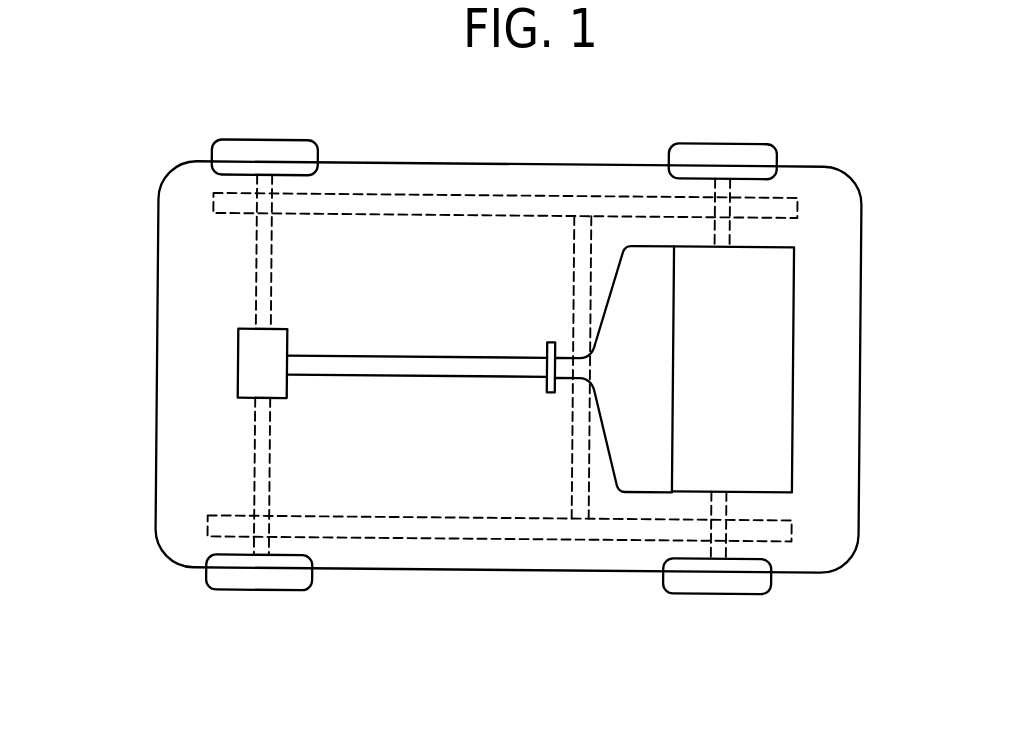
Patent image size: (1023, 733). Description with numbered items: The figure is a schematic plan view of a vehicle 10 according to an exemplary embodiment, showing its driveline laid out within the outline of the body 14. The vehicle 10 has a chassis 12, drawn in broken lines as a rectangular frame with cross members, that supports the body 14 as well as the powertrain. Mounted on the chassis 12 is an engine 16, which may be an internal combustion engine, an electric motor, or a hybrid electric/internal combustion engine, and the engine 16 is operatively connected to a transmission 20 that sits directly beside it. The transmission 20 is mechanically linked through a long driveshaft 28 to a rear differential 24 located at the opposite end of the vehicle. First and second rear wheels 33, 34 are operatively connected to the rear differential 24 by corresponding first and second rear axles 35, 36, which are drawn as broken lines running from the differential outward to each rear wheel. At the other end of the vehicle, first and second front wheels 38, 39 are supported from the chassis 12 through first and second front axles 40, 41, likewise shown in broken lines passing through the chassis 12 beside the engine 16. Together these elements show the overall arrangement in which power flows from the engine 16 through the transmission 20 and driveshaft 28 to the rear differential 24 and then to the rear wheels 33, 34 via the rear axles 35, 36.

The vehicle 10 is at (133, 111).
The chassis 12 is at (336, 542).
The body 14 is at (859, 490).
The engine 16 is at (746, 378).
The transmission 20 is at (651, 379).
The rear differential 24 is at (248, 359).
The driveshaft 28 is at (342, 372).
The first rear wheel 33 is at (215, 142).
The second rear wheel 34 is at (214, 593).
The first rear axle 35 is at (271, 272).
The second rear axle 36 is at (269, 458).
The first front wheel 38 is at (735, 150).
The second front wheel 39 is at (704, 586).
The first front axle 40 is at (729, 226).
The second front axle 41 is at (729, 500).